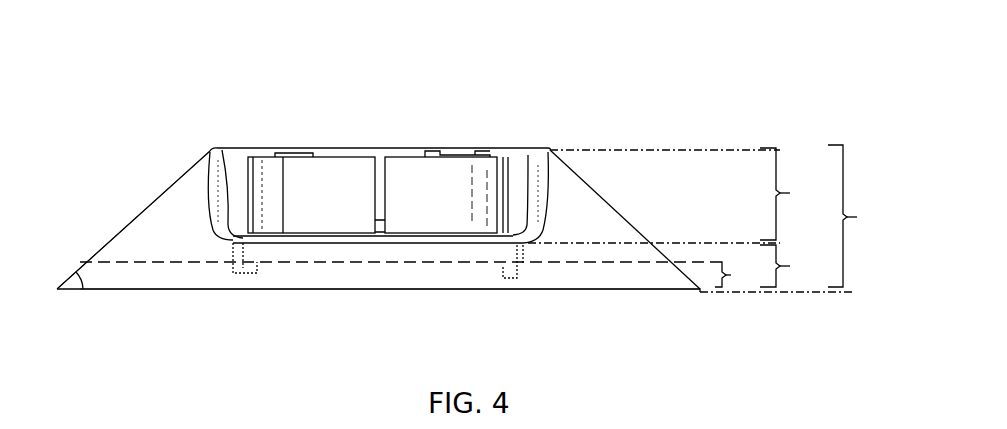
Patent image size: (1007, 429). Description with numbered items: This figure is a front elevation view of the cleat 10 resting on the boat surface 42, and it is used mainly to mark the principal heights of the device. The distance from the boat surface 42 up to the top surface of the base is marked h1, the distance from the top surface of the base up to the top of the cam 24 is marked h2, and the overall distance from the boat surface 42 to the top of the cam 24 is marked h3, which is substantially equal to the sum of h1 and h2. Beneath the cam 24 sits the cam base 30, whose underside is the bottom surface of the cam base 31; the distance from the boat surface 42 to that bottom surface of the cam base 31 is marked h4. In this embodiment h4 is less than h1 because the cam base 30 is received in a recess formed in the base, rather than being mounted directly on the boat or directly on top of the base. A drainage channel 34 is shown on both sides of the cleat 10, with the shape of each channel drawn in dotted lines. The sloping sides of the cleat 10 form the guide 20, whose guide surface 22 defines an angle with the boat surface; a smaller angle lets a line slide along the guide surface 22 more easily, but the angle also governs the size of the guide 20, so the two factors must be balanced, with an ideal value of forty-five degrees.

The cleat 10 is at (188, 122).
The guide 20 is at (175, 222).
The guide surface 22 is at (108, 236).
The cam 24 is at (495, 157).
The cam base 30 is at (393, 250).
The bottom surface of the cam base 31 is at (347, 262).
The drainage channel 34 is at (190, 268).
The boat surface 42 is at (775, 292).
The distance from the boat surface to the top surface of the base h1 is at (791, 266).
The distance from the top surface of the base to the top of the cam h2 is at (791, 194).
The distance from the boat surface to the top of the cam h3 is at (859, 216).
The distance from the boat surface to the bottom surface of the cam base h4 is at (738, 275).